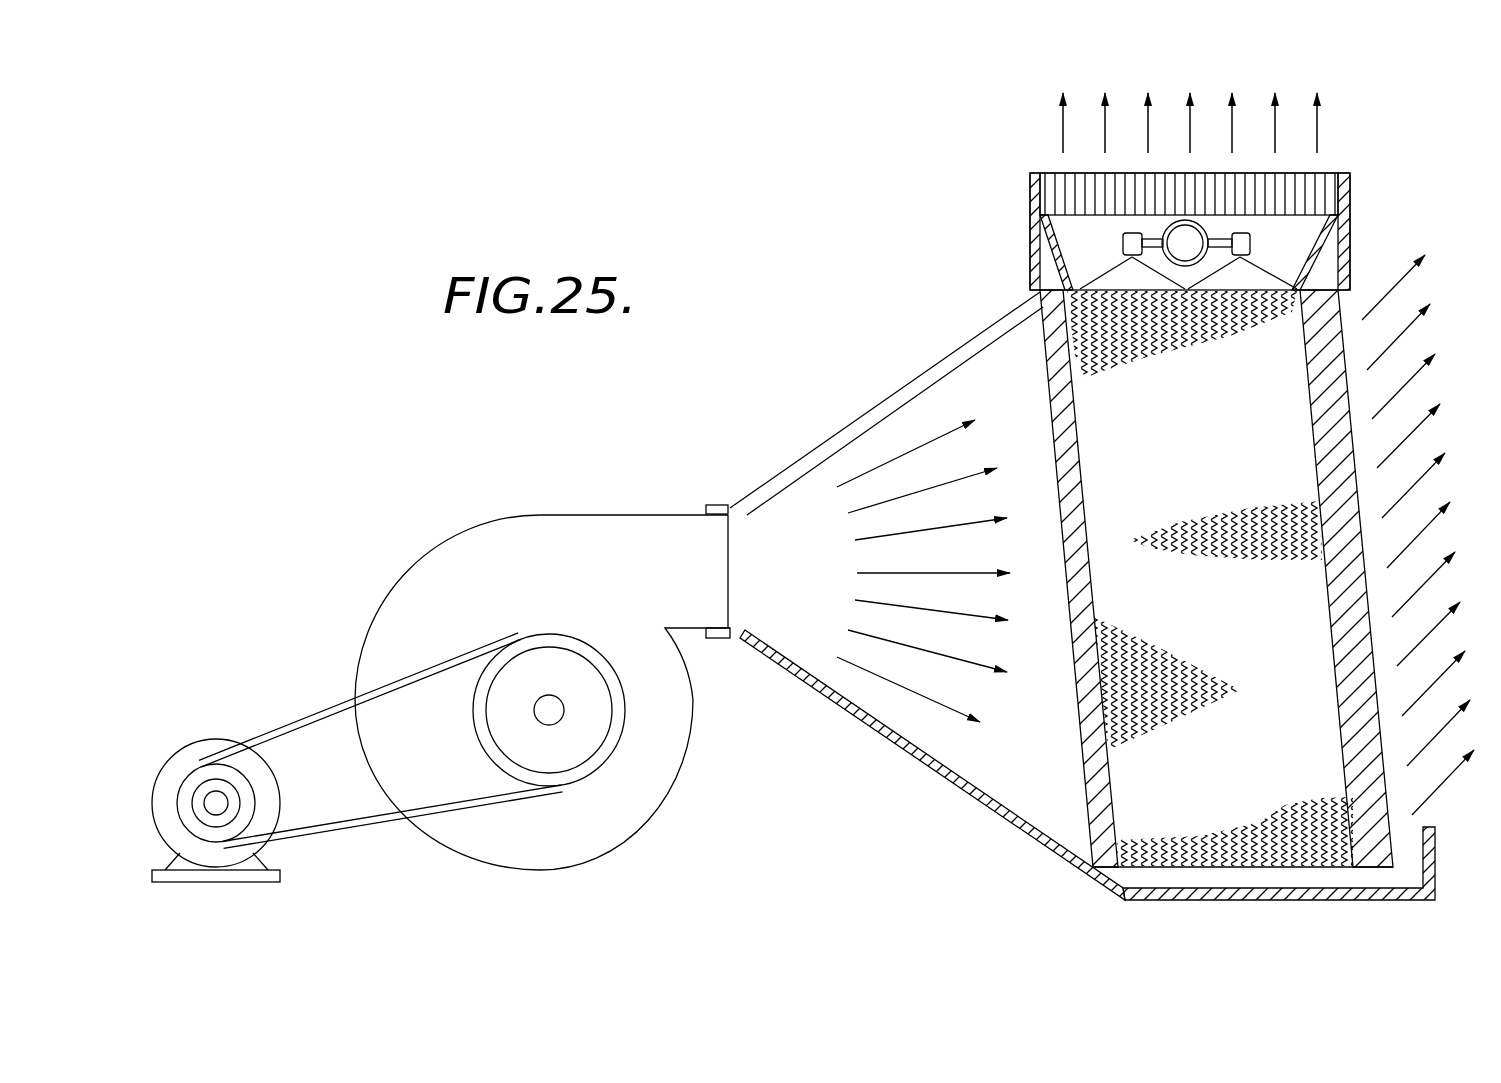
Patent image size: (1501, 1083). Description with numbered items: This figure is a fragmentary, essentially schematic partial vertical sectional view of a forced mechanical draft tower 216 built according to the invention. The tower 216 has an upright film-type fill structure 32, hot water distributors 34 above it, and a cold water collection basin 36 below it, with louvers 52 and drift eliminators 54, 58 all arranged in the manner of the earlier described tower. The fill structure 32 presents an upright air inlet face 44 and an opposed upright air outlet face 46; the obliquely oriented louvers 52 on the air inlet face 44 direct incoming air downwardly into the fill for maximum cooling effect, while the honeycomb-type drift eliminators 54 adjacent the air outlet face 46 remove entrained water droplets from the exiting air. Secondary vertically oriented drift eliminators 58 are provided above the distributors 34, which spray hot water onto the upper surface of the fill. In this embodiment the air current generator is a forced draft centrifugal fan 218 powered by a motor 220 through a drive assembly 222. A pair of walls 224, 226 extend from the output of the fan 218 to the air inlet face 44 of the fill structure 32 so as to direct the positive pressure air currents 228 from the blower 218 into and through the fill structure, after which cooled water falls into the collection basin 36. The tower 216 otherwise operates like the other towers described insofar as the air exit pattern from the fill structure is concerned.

The forced mechanical draft tower 216 is at (1223, 490).
The forced draft centrifugal fan 218 is at (505, 533).
The motor 220 is at (203, 752).
The drive assembly 222 is at (420, 688).
The wall 224 is at (850, 430).
The wall 226 is at (903, 748).
The positive pressure air currents 228 is at (880, 537).
The louvers 52 is at (927, 596).
The secondary drift eliminators 58 is at (1320, 178).
The hot water distributors 34 is at (1104, 245).
The fill structure 32 is at (1198, 568).
The air inlet face 44 is at (1084, 489).
The air outlet face 46 is at (1313, 464).
The cold water collection basin 36 is at (1110, 897).
The drift eliminators 54 is at (1355, 503).